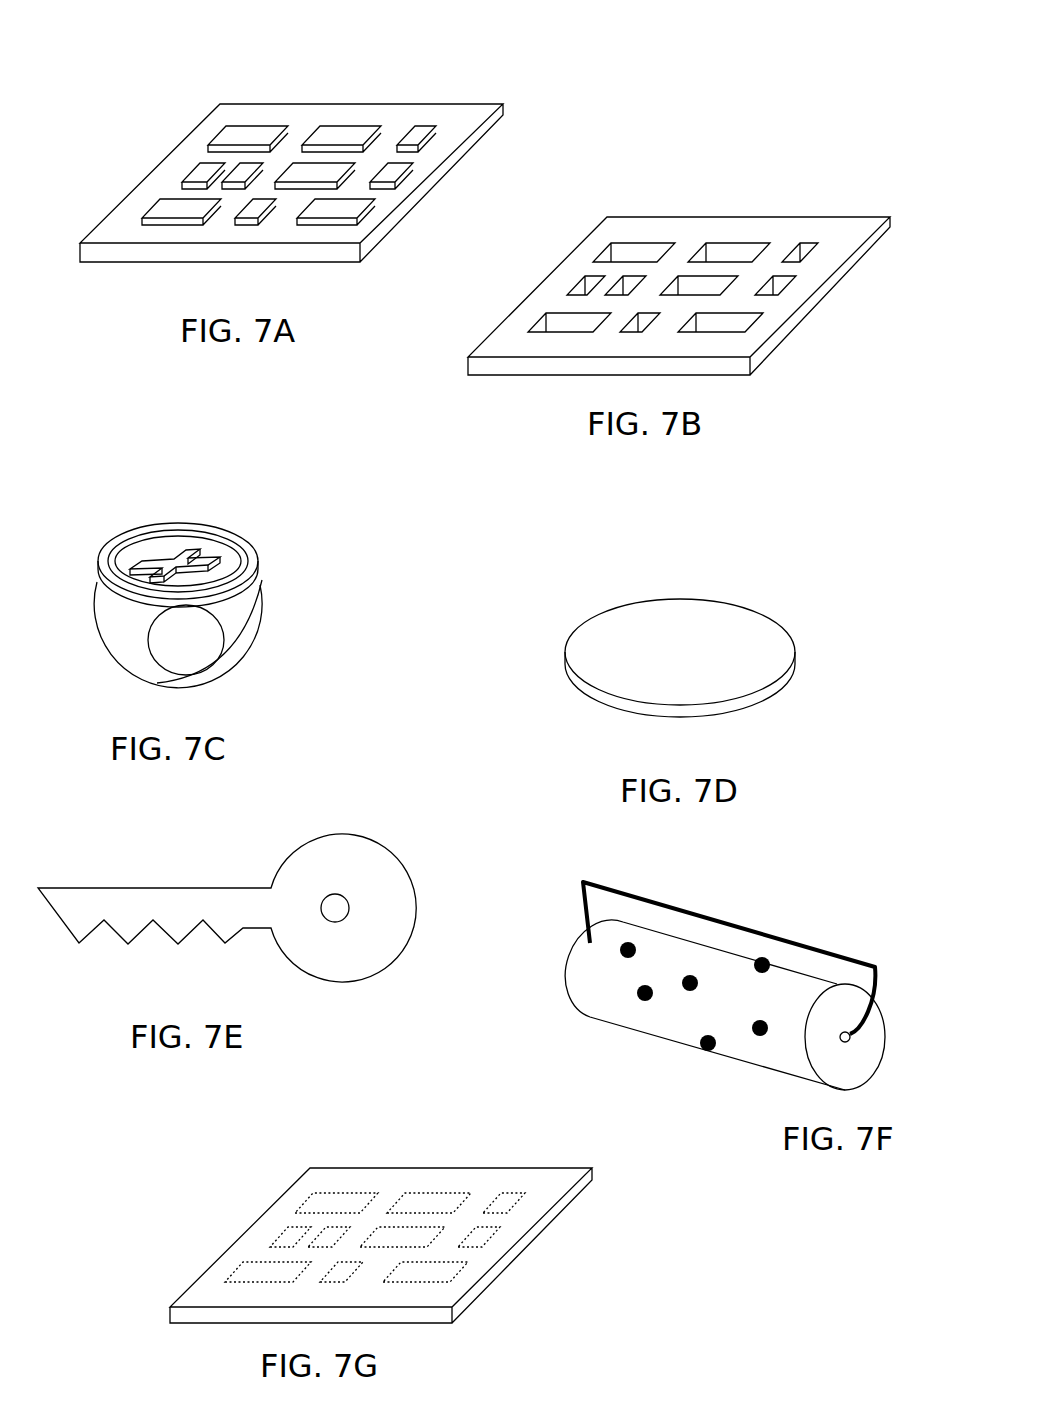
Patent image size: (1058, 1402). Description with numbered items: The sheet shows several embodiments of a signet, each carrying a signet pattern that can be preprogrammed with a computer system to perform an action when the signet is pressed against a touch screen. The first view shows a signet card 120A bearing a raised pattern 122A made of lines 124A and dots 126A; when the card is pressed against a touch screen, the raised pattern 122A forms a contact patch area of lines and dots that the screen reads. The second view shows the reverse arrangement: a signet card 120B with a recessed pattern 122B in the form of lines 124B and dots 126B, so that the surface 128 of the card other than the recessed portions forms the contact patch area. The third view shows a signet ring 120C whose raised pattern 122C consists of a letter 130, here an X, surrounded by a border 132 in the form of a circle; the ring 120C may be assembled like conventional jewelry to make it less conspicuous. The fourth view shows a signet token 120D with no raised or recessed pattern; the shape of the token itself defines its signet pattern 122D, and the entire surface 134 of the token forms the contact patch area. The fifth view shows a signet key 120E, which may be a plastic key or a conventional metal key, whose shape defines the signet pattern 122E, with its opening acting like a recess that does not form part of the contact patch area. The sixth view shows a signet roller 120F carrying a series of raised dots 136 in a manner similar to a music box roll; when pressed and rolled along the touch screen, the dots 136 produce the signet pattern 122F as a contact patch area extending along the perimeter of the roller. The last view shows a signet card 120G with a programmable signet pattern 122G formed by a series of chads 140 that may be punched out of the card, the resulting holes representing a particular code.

In FIG. 7A, the signet card 120A is at (343, 55).
In FIG. 7A, the raised pattern 122A is at (402, 110).
In FIG. 7A, the lines 124A is at (198, 170).
In FIG. 7A, the dots 126A is at (247, 133).
In FIG. 7B, the signet card 120B is at (682, 186).
In FIG. 7B, the recessed pattern 122B is at (743, 243).
In FIG. 7B, the lines 124B is at (578, 285).
In FIG. 7B, the dots 126B is at (627, 250).
In FIG. 7B, the surface 128 is at (513, 340).
In FIG. 7C, the signet ring 120C is at (168, 495).
In FIG. 7C, the raised pattern 122C is at (226, 551).
In FIG. 7C, the letter 130 is at (213, 563).
In FIG. 7C, the border 132 is at (213, 587).
In FIG. 7D, the signet token 120D is at (635, 570).
In FIG. 7D, the signet pattern 122D is at (694, 626).
In FIG. 7D, the surface 134 is at (610, 652).
In FIG. 7E, the signet key 120E is at (142, 846).
In FIG. 7E, the signet pattern 122E is at (312, 878).
In FIG. 7F, the signet roller 120F is at (662, 876).
In FIG. 7F, the signet pattern 122F is at (662, 1020).
In FIG. 7F, the raised dots 136 is at (712, 1052).
In FIG. 7G, the signet card 120G is at (425, 1128).
In FIG. 7G, the programmable signet pattern 122G is at (487, 1183).
In FIG. 7G, the chads 140 is at (480, 1237).